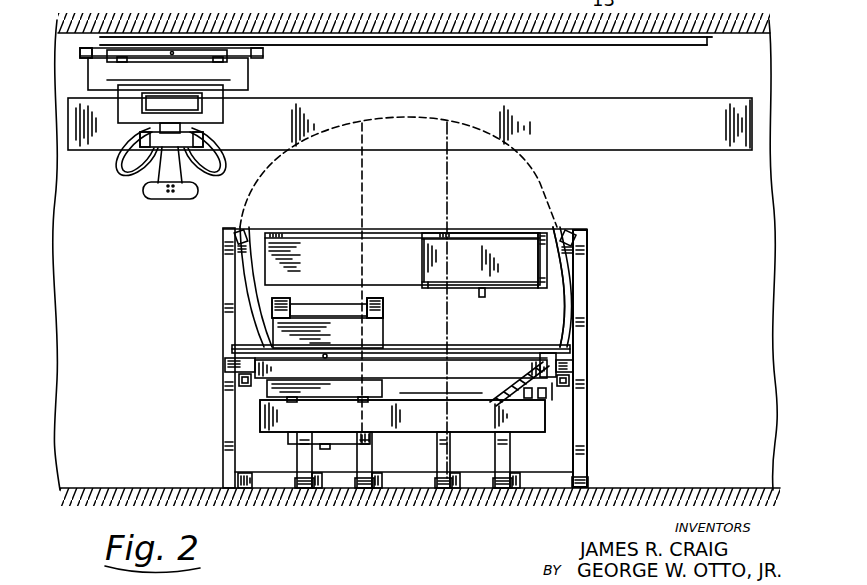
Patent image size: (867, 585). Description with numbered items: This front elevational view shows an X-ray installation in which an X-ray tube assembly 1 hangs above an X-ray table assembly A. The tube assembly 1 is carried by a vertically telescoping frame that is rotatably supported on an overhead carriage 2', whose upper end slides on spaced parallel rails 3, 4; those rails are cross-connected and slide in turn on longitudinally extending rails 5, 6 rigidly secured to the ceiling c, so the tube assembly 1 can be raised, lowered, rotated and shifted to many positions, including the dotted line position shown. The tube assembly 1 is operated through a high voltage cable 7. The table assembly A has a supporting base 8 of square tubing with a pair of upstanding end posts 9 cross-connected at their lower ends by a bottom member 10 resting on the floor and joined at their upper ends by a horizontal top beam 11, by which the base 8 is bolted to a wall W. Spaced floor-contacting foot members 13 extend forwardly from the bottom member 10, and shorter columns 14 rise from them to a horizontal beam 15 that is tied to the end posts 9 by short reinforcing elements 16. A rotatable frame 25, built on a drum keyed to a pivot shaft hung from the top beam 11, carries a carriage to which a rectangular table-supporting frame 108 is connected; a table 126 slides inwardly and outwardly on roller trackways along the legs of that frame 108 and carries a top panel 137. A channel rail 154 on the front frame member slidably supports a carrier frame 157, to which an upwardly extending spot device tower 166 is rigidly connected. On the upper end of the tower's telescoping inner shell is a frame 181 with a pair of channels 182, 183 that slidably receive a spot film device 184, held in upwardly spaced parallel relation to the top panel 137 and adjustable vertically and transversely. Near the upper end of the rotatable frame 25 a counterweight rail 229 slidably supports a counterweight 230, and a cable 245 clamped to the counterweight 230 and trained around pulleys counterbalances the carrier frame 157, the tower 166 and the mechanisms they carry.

The X-ray tube assembly 1 is at (155, 196).
The overhead carriage 2' is at (191, 90).
The rail 3 is at (265, 52).
The rail 4 is at (82, 50).
The longitudinally extending rail 5 is at (472, 42).
The longitudinally extending rail 6 is at (406, 41).
The high voltage cable 7 is at (120, 172).
The supporting base 8 is at (591, 340).
The end posts 9 is at (223, 299).
The bottom member 10 is at (259, 474).
The horizontal top beam 11 is at (572, 232).
The floor-contacting foot members 13 is at (362, 489).
The columns 14 is at (582, 428).
The horizontal beam 15 is at (574, 367).
The reinforcing elements 16 is at (245, 388).
The rotatable frame 25 is at (258, 185).
The table-supporting frame 108 is at (259, 411).
The table 126 is at (525, 337).
The top panel 137 is at (498, 345).
The channel rail 154 is at (426, 397).
The carrier frame 157 is at (333, 388).
The spot device tower 166 is at (385, 332).
The frame 181 is at (380, 297).
The channel 182 is at (384, 308).
The channel 183 is at (273, 308).
The spot film device 184 is at (328, 302).
The counterweight rail 229 is at (348, 234).
The counterweight 230 is at (512, 234).
The cable 245 is at (479, 296).
The X-ray table assembly A is at (606, 301).
The ceiling c is at (726, 34).
The wall W is at (765, 220).